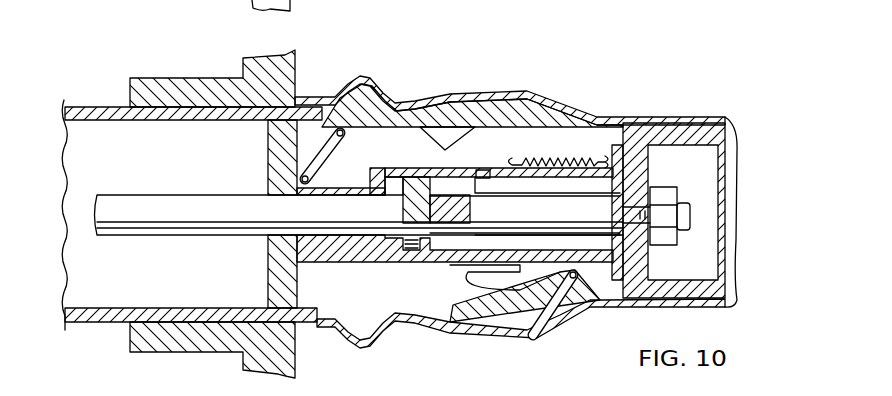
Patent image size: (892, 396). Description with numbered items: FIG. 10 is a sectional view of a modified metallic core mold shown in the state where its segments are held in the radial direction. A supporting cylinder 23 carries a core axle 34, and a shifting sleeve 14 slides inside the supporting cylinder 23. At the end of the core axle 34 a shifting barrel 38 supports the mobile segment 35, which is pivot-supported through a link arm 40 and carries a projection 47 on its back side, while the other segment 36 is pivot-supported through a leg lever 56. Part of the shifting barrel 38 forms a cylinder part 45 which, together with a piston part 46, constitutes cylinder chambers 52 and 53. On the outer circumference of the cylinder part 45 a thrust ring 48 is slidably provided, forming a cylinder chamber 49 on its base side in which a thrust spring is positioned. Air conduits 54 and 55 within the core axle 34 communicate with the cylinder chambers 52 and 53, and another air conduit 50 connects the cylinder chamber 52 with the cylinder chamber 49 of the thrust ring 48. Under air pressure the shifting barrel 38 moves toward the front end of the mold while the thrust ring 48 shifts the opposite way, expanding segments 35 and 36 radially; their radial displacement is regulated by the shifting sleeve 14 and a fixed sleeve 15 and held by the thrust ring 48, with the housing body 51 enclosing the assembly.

The shifting sleeve 14 is at (100, 108).
The supporting cylinder 23 is at (156, 84).
The shifting barrel 38 is at (268, 154).
The air conduit 55 is at (345, 204).
The core axle 34 is at (162, 237).
The segment 35 is at (433, 102).
The segment 36 is at (465, 320).
The housing body 51 is at (560, 143).
The cylinder part 45 is at (427, 264).
The fixed sleeve 15 is at (646, 128).
The cylinder chamber 52 is at (566, 192).
The cylinder chamber 49 is at (516, 177).
The air conduit 50 is at (481, 180).
The thrust ring 48 is at (480, 150).
The projection 47 is at (455, 128).
The link arm 40 is at (322, 159).
The cylinder chamber 53 is at (391, 176).
The piston part 46 is at (413, 177).
The air conduit 54 is at (438, 212).
The lower lever 56 is at (580, 278).